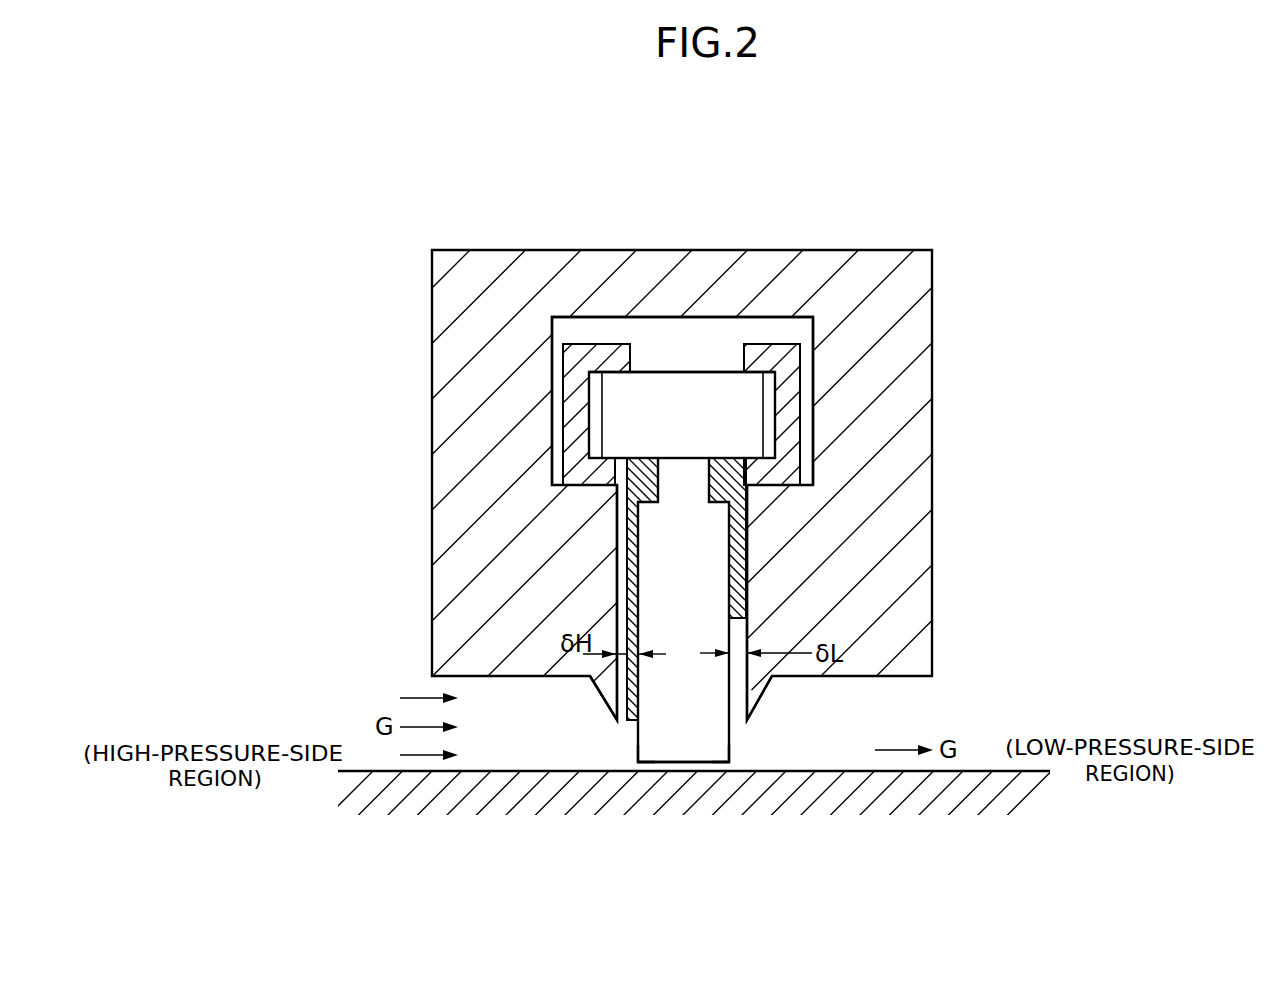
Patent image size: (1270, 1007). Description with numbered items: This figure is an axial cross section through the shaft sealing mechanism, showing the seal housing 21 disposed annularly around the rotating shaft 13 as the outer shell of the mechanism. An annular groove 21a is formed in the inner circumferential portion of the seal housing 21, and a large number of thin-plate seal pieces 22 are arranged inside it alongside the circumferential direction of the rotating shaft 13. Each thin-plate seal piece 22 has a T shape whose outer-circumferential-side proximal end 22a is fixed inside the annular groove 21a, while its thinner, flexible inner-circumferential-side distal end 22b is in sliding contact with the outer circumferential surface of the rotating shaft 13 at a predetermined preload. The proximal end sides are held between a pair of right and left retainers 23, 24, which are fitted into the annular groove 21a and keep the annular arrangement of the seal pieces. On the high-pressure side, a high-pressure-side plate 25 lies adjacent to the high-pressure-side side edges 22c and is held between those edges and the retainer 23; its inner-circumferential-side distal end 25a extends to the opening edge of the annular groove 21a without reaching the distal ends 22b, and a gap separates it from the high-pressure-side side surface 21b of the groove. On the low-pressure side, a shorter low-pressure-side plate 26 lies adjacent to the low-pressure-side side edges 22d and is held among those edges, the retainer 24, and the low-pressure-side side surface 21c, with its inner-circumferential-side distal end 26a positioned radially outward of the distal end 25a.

The rotating shaft 13 is at (360, 771).
The seal housing 21 is at (820, 244).
The annular groove 21a is at (588, 318).
The high-pressure-side side surface 21b is at (616, 690).
The low-pressure-side side surface 21c is at (744, 686).
The thin-plate seal piece 22 is at (678, 356).
The outer-circumferential-side proximal end 22a is at (714, 371).
The inner-circumferential-side distal end 22b is at (685, 762).
The high-pressure-side side edge 22c is at (638, 751).
The low-pressure-side side edge 22d is at (731, 750).
The retainer 23 is at (576, 344).
The retainer 24 is at (795, 334).
The high-pressure-side plate 25 is at (612, 560).
The inner-circumferential-side distal end 25a is at (629, 723).
The low-pressure-side plate 26 is at (765, 548).
The inner-circumferential-side distal end 26a is at (747, 630).